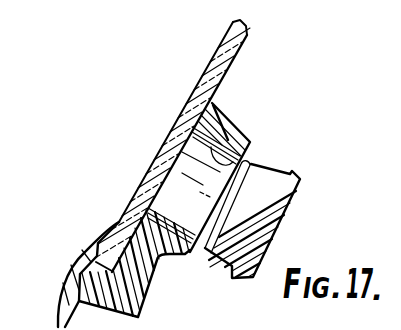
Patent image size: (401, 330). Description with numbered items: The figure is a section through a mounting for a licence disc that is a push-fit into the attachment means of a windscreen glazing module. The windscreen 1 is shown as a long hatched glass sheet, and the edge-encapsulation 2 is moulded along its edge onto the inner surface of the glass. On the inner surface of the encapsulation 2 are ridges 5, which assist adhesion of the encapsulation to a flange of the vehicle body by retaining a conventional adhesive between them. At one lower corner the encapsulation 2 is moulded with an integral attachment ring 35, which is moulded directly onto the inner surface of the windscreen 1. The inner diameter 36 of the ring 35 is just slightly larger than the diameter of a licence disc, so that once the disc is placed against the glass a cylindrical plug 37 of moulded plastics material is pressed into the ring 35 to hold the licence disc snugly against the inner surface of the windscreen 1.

The windscreen 1 is at (200, 79).
The edge-encapsulation 2 is at (82, 279).
The ridges 5 is at (140, 318).
The attachment ring 35 is at (229, 130).
The inner diameter 36 is at (235, 166).
The cylindrical plug 37 is at (270, 203).